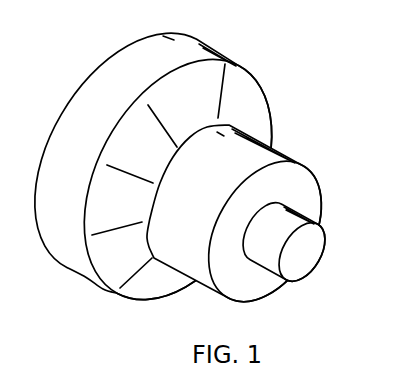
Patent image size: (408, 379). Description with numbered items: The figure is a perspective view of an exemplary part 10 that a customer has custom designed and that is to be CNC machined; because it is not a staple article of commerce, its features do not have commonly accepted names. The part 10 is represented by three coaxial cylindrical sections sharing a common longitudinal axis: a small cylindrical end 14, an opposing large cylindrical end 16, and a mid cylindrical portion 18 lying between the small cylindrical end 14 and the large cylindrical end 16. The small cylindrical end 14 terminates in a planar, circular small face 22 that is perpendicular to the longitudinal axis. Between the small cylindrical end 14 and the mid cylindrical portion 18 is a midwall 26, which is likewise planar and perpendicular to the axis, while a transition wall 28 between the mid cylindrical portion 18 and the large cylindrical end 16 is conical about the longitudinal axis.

The part 10 is at (205, 180).
The small cylindrical end 14 is at (314, 222).
The large cylindrical end 16 is at (148, 73).
The mid cylindrical portion 18 is at (268, 156).
The small face 22 is at (307, 252).
The midwall 26 is at (287, 182).
The transition wall 28 is at (246, 92).